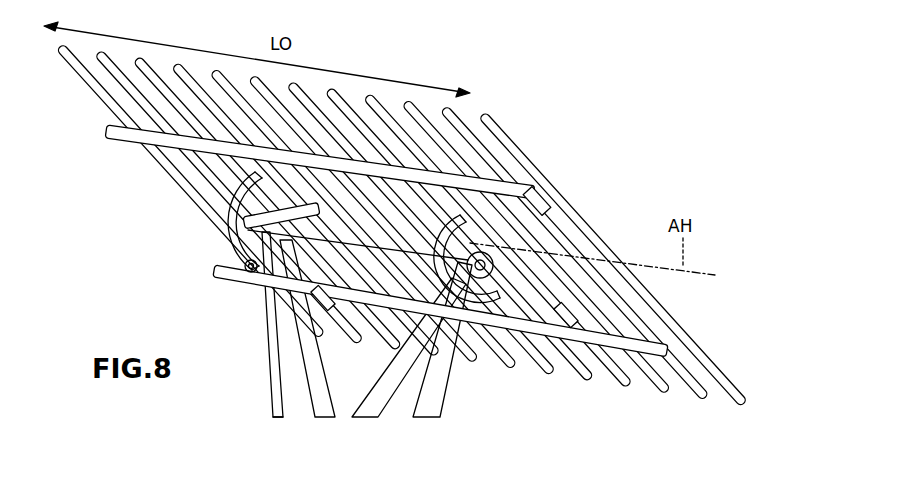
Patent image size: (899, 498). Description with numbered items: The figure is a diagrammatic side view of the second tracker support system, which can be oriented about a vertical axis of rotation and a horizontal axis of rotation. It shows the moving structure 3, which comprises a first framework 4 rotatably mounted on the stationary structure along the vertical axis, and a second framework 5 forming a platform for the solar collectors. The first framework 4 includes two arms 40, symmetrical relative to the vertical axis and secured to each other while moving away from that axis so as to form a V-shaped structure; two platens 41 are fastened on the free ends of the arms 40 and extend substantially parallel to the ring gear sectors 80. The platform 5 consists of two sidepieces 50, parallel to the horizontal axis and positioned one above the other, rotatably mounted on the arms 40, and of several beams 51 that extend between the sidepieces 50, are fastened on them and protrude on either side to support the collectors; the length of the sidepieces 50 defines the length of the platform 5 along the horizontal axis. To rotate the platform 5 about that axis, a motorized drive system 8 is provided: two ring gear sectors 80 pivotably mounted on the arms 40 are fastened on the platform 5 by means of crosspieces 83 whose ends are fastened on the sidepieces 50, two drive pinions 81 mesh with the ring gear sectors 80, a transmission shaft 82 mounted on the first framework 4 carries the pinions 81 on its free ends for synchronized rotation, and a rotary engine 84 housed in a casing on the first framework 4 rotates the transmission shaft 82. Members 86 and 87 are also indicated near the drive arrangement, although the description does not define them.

The moving structure 3 is at (144, 183).
The first framework 4 is at (249, 383).
The second framework 5 is at (620, 383).
The motorized drive system 8 is at (253, 277).
The arms 40 is at (292, 338).
The platens 41 is at (242, 250).
The sidepieces 50 is at (528, 183).
The beams 51 is at (108, 120).
The ring gear sectors 80 is at (247, 190).
The drive pinions 81 is at (481, 300).
The transmission shaft 82 is at (340, 312).
The crosspieces 83 is at (545, 203).
The rotary engine 84 is at (246, 270).
The stop 86 is at (245, 262).
The arm 87 is at (245, 221).